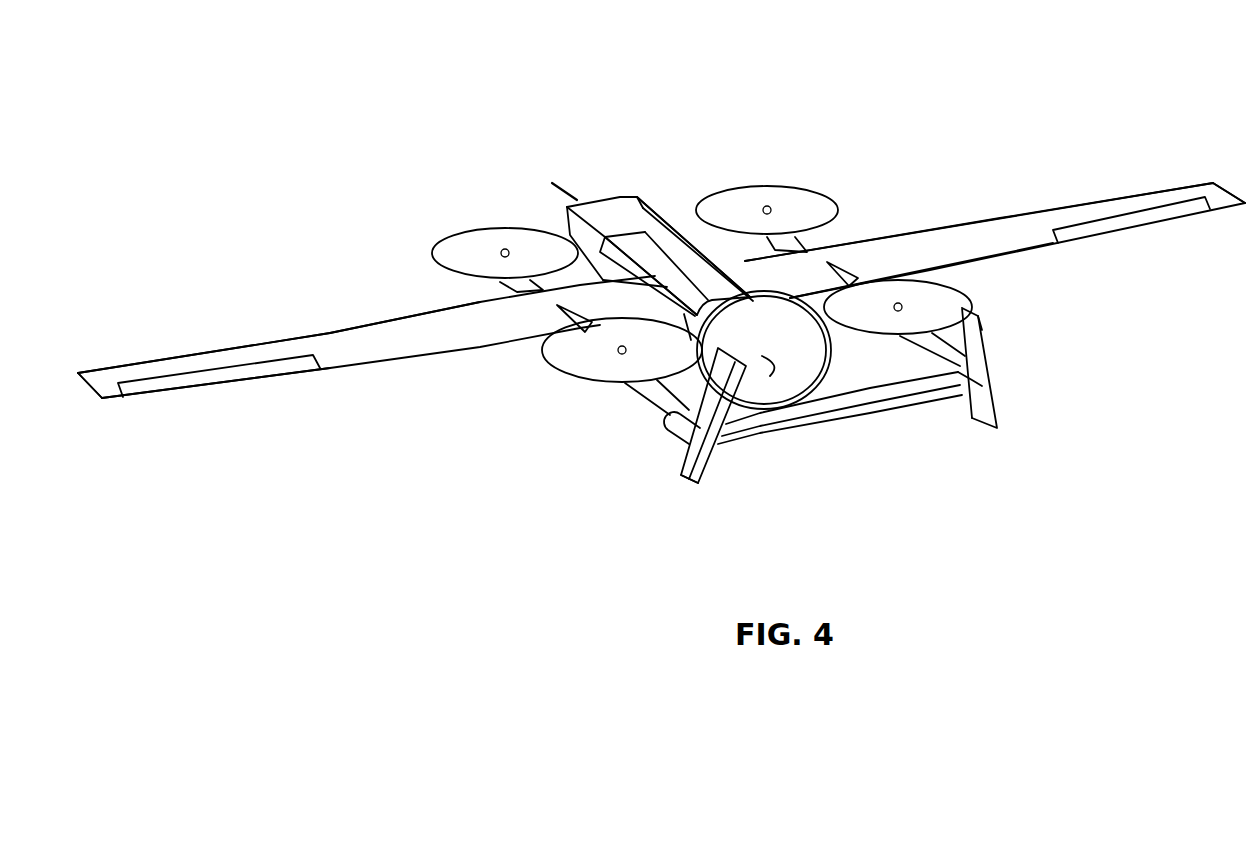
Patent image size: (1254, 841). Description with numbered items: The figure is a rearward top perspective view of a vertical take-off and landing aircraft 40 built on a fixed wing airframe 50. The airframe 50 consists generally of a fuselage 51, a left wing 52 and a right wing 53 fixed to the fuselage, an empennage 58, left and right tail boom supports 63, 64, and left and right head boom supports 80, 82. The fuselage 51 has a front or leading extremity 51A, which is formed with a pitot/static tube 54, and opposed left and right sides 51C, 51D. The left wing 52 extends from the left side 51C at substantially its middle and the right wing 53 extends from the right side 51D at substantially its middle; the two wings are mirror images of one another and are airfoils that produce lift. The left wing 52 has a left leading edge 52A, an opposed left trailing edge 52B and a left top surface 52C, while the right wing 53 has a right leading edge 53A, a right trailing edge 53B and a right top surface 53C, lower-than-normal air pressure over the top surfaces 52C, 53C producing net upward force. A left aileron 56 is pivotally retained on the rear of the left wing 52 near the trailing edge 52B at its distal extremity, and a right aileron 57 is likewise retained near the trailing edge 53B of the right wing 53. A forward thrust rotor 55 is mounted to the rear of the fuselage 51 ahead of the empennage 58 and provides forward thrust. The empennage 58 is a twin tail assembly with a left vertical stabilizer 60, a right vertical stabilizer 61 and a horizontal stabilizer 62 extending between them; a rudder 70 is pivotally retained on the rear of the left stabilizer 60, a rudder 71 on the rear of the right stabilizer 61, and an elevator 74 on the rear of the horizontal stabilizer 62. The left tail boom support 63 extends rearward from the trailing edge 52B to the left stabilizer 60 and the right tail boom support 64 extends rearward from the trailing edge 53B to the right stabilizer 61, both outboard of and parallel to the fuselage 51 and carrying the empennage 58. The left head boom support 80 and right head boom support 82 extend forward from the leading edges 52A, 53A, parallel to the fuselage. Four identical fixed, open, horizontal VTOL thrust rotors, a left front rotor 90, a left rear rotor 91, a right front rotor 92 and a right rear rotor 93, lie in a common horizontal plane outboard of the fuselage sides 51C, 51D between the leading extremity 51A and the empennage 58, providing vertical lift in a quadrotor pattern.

The VTOL aircraft 40 is at (950, 97).
The airframe 50 is at (1095, 198).
The fuselage 51 is at (650, 200).
The leading extremity 51A is at (615, 197).
The left side 51C is at (663, 285).
The right side 51D is at (743, 272).
The left wing 52 is at (352, 357).
The left leading edge 52A is at (307, 333).
The left trailing edge 52B is at (397, 362).
The left top surface 52C is at (368, 340).
The right wing 53 is at (1140, 200).
The right leading edge 53A is at (977, 218).
The right trailing edge 53B is at (1043, 247).
The right top surface 53C is at (1028, 215).
The pitot/static tube 54 is at (565, 185).
The forward thrust rotor 55 is at (823, 373).
The left aileron 56 is at (233, 375).
The right aileron 57 is at (1167, 217).
The empennage 58 is at (1002, 410).
The left vertical stabilizer 60 is at (677, 463).
The right vertical stabilizer 61 is at (972, 333).
The horizontal stabilizer 62 is at (810, 407).
The left tail boom support 63 is at (650, 405).
The right tail boom support 64 is at (930, 357).
The rudder 70 is at (697, 470).
The rudder 71 is at (990, 365).
The elevator 74 is at (767, 428).
The left head boom support 80 is at (517, 292).
The right head boom support 82 is at (803, 237).
The left front VTOL thrust rotor 90 is at (478, 237).
The left rear VTOL thrust rotor 91 is at (580, 375).
The right front VTOL thrust rotor 92 is at (757, 190).
The right rear VTOL thrust rotor 93 is at (891, 288).